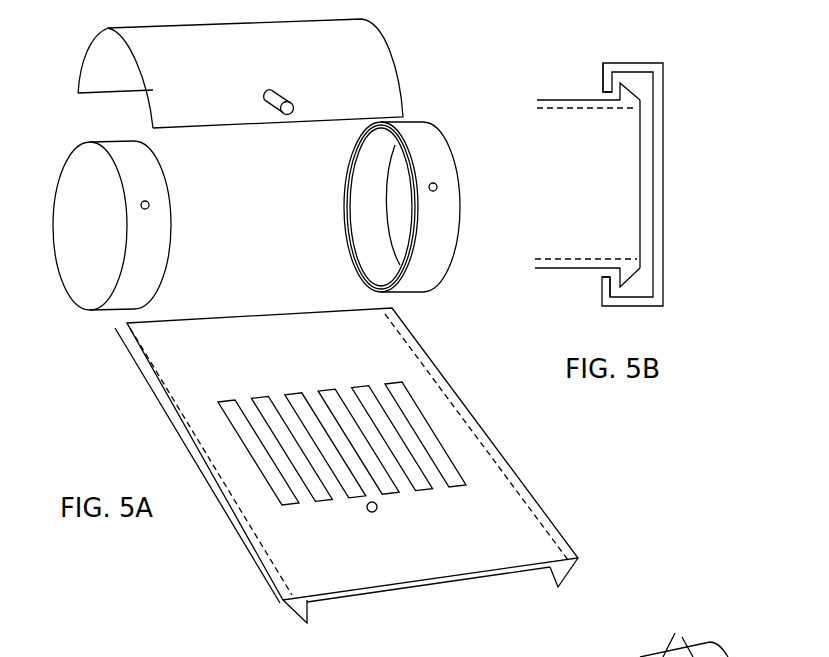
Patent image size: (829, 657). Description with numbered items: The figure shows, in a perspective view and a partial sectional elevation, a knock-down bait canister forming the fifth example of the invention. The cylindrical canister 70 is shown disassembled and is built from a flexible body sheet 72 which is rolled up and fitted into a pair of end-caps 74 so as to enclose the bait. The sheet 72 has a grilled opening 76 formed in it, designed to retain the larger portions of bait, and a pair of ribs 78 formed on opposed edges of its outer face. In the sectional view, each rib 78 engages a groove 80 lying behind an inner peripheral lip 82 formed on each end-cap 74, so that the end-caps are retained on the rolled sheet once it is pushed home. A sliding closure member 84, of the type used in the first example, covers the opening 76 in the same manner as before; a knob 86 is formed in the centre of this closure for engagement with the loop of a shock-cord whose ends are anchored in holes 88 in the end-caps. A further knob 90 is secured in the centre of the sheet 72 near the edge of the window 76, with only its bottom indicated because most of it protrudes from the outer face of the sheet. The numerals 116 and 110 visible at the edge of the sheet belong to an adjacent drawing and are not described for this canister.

In FIG. 5A, the cylindrical canister 70 is at (87, 369).
In FIG. 5B, the cylindrical canister 70 is at (683, 168).
In FIG. 5A, the flexible body sheet 72 is at (521, 535).
In FIG. 5B, the flexible body sheet 72 is at (565, 263).
In FIG. 5A, the end-cap 74 is at (147, 233).
In FIG. 5B, the end-cap 74 is at (657, 248).
In FIG. 5A, the grilled opening 76 is at (420, 417).
In FIG. 5B, the grilled opening 76 is at (570, 108).
In FIG. 5A, the rib 78 is at (310, 625).
In FIG. 5B, the rib 78 is at (640, 100).
In FIG. 5B, the groove 80 is at (652, 88).
In FIG. 5A, the inner peripheral lip 82 is at (362, 263).
In FIG. 5B, the inner peripheral lip 82 is at (607, 92).
In FIG. 5A, the sliding closure member 84 is at (360, 74).
In FIG. 5A, the knob 86 is at (270, 105).
In FIG. 5A, the hole 88 is at (149, 205).
In FIG. 5A, the knob 90 is at (369, 512).
In FIG. 5A, the fragment 116 is at (684, 635).
In FIG. 5A, the fragment 110 is at (763, 644).